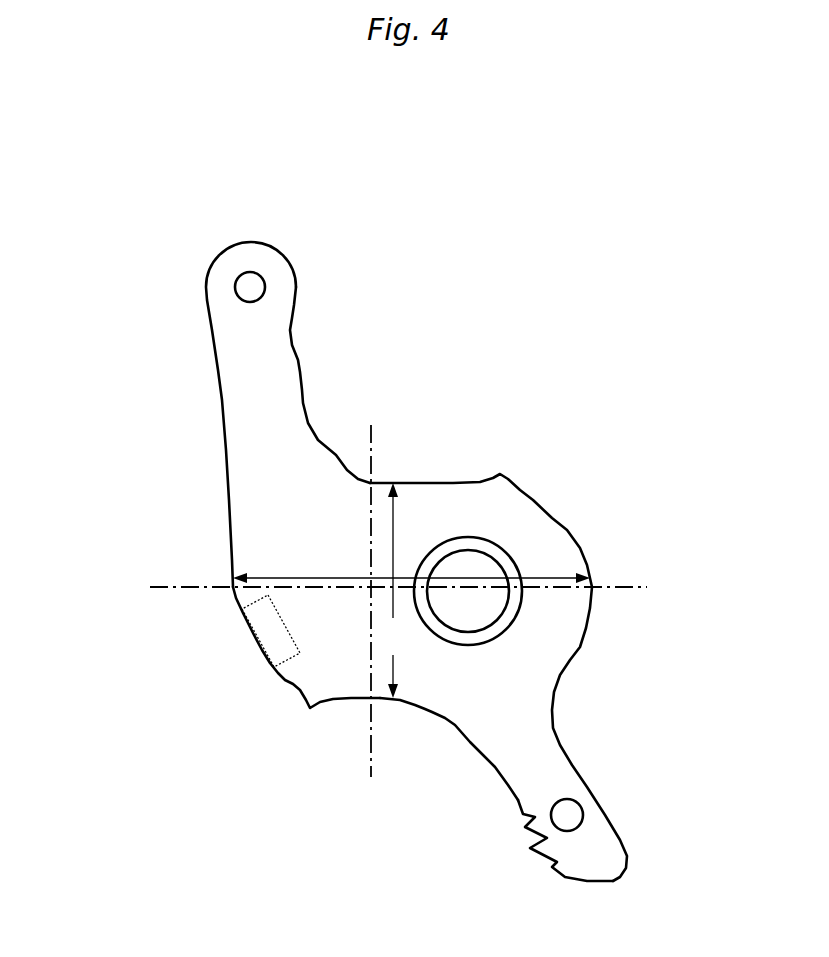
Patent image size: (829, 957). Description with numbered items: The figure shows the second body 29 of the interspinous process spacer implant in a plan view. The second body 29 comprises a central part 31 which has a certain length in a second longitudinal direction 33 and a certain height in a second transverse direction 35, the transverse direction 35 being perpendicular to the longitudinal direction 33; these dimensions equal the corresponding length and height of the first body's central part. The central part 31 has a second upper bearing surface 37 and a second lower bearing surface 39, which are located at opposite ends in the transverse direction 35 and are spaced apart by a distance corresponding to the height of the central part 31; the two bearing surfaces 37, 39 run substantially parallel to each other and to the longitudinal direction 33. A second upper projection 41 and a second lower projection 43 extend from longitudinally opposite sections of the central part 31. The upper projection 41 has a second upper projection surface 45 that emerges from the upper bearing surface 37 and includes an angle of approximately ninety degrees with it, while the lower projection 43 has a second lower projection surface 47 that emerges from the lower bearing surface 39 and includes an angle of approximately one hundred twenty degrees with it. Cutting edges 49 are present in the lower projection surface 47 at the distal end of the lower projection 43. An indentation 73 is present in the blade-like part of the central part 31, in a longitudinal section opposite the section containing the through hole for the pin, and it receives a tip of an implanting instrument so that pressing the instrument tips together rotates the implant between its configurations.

The second body 29 is at (596, 258).
The central part 31 is at (410, 512).
The second longitudinal direction 33 is at (630, 587).
The second transverse direction 35 is at (373, 745).
The second upper bearing surface 37 is at (451, 483).
The second lower bearing surface 39 is at (351, 698).
The second upper projection 41 is at (228, 332).
The second upper projection surface 45 is at (300, 372).
The second lower projection 43 is at (542, 747).
The second lower projection surface 47 is at (495, 767).
The cutting edges 49 is at (552, 867).
The indentation 73 is at (273, 637).